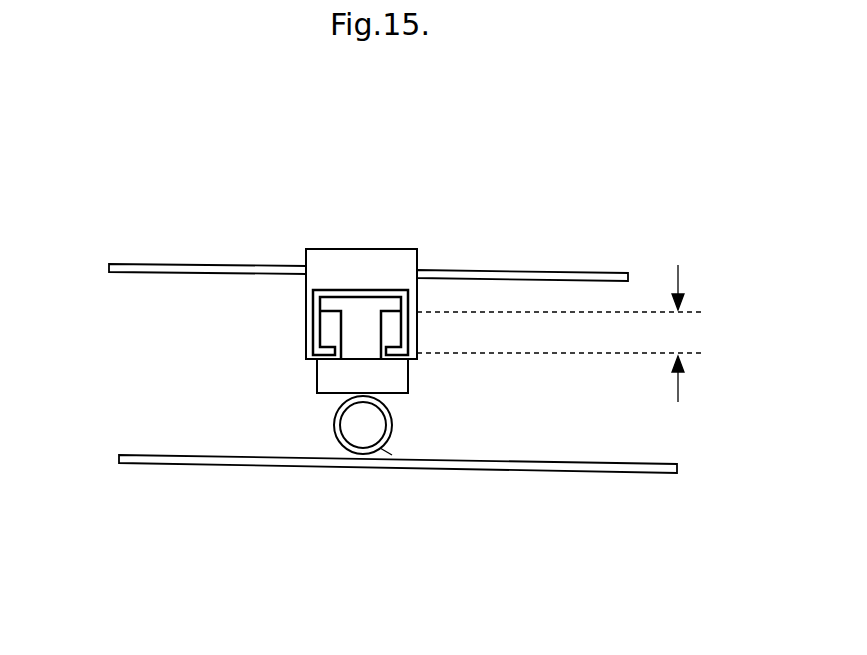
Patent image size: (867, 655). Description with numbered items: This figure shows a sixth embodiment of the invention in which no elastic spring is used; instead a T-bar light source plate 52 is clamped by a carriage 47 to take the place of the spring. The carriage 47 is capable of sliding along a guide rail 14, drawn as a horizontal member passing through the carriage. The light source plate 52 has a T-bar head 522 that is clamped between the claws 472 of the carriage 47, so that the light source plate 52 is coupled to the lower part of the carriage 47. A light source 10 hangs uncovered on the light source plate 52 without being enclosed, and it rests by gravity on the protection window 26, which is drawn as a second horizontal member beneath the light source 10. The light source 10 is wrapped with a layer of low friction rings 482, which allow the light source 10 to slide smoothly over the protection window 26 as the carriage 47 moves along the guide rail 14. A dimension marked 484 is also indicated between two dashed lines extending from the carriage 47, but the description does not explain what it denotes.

The guide rail 14 is at (119, 265).
The carriage 47 is at (326, 266).
The claws 472 is at (306, 326).
The T-bar head 522 is at (368, 308).
The T-bar light source plate 52 is at (325, 383).
The light source 10 is at (372, 423).
The protection window 26 is at (140, 465).
The low friction rings 482 is at (385, 450).
The gap distance 484 is at (592, 333).